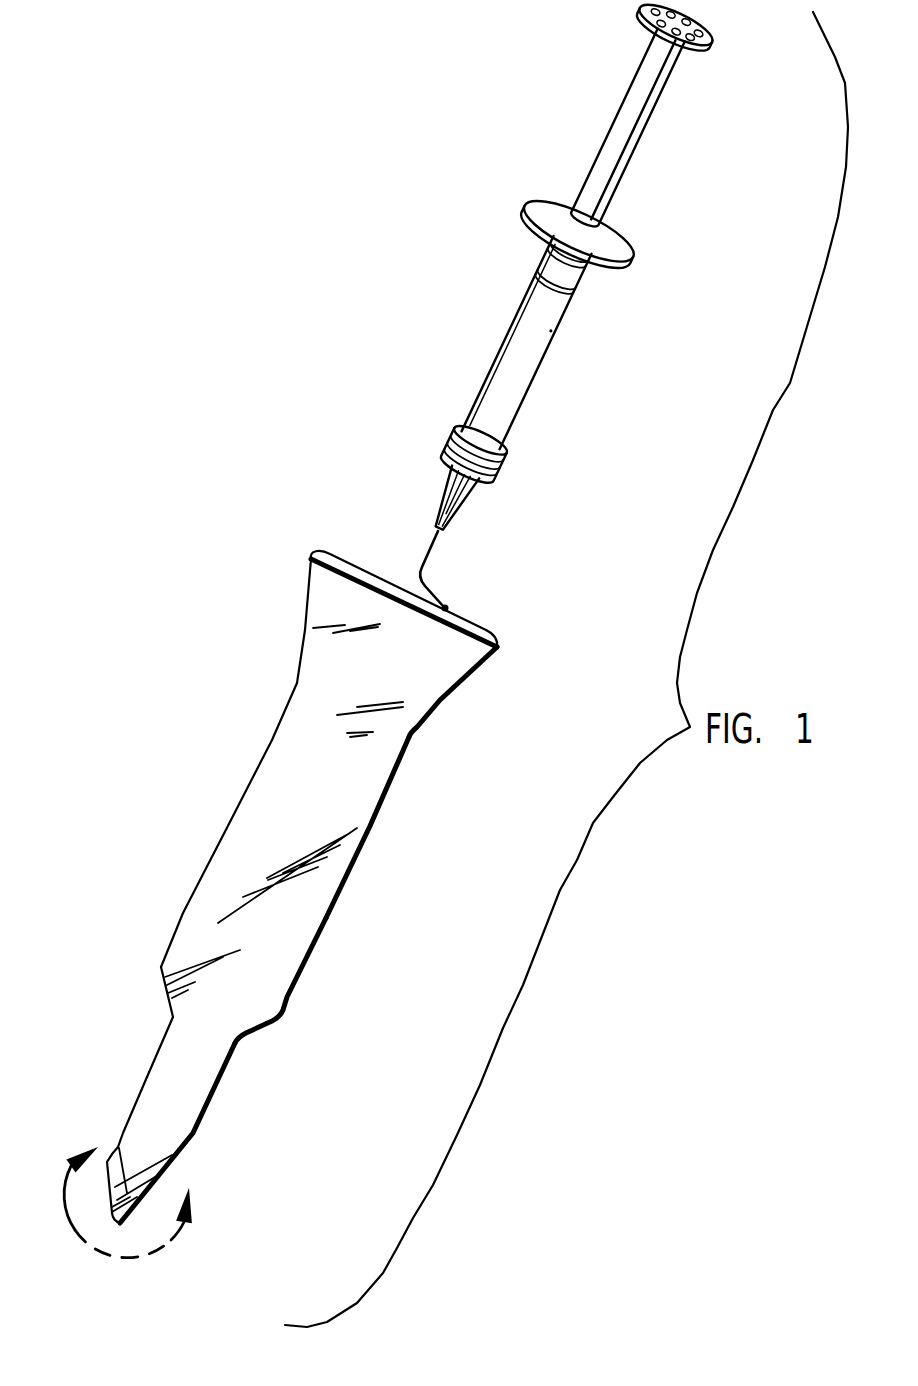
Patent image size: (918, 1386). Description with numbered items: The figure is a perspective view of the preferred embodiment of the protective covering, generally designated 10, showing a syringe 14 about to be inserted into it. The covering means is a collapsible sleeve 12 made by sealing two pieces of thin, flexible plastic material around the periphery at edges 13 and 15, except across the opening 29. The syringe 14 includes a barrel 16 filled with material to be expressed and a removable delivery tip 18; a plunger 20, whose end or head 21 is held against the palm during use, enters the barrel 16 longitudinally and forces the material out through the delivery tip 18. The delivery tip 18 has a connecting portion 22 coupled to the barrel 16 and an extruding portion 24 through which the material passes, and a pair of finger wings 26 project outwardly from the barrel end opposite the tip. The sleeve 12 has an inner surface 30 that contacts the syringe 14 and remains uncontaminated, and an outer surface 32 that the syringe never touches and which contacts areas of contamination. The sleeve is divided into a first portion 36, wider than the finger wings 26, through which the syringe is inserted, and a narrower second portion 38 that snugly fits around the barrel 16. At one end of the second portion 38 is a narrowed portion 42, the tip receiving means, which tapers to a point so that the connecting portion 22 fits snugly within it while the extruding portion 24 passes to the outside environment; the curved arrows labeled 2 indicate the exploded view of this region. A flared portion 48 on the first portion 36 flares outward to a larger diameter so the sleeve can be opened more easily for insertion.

The protective covering 10 is at (166, 857).
The collapsible sleeve 12 is at (263, 840).
The edge 13 is at (273, 735).
The syringe 14 is at (499, 255).
The edge 15 is at (320, 928).
The barrel 16 is at (538, 380).
The delivery tip 18 is at (492, 543).
The plunger 20 is at (627, 127).
The head of the plunger 21 is at (694, 27).
The connecting portion 22 is at (455, 507).
The extruding portion 24 is at (449, 607).
The finger wings 26 is at (605, 250).
The opening 29 is at (339, 562).
The inner surface 30 is at (475, 637).
The outer surface 32 is at (454, 668).
The first portion 36 is at (378, 820).
The second portion 38 is at (195, 1133).
The narrowed portion 42 is at (120, 1147).
The flared portion 48 is at (477, 768).
The section line for FIG. 2 is at (123, 1206).